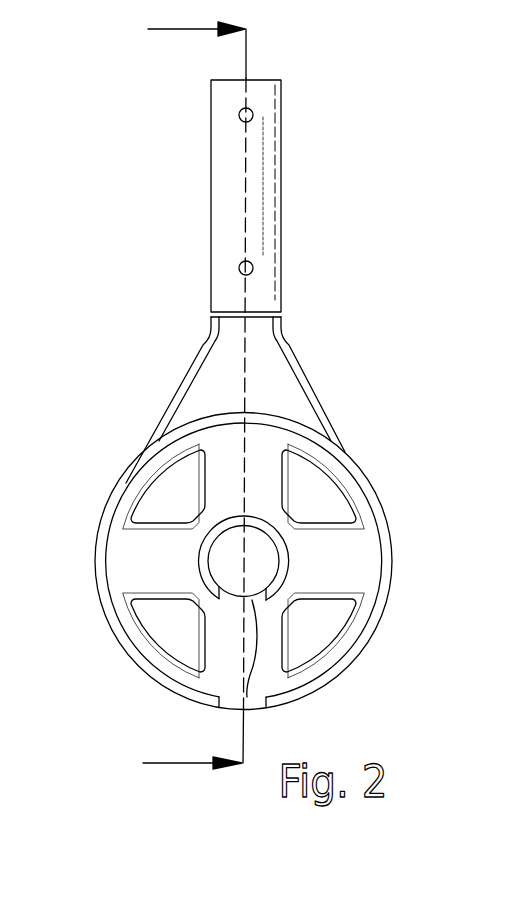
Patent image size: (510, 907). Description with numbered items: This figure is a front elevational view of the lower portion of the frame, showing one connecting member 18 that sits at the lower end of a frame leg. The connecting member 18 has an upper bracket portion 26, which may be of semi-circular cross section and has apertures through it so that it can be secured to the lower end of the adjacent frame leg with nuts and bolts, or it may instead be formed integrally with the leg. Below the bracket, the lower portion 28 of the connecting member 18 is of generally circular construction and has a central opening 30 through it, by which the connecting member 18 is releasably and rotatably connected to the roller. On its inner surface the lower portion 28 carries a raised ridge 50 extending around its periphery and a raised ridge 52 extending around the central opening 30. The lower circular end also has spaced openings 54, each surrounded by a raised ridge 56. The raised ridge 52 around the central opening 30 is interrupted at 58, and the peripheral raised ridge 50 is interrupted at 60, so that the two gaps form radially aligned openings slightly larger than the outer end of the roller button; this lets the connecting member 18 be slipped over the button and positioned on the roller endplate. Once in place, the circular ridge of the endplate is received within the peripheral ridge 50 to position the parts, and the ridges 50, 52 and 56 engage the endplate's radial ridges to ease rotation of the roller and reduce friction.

The connecting member 18 is at (288, 348).
The upper bracket portion 26 is at (285, 145).
The lower portion 28 is at (390, 540).
The central opening 30 is at (255, 562).
The raised ridge 50 is at (245, 564).
The raised ridge 52 is at (290, 572).
The spaced openings 54 is at (178, 490).
The raised ridges 56 is at (133, 508).
The interruption 58 is at (245, 708).
The interruption 60 is at (230, 708).